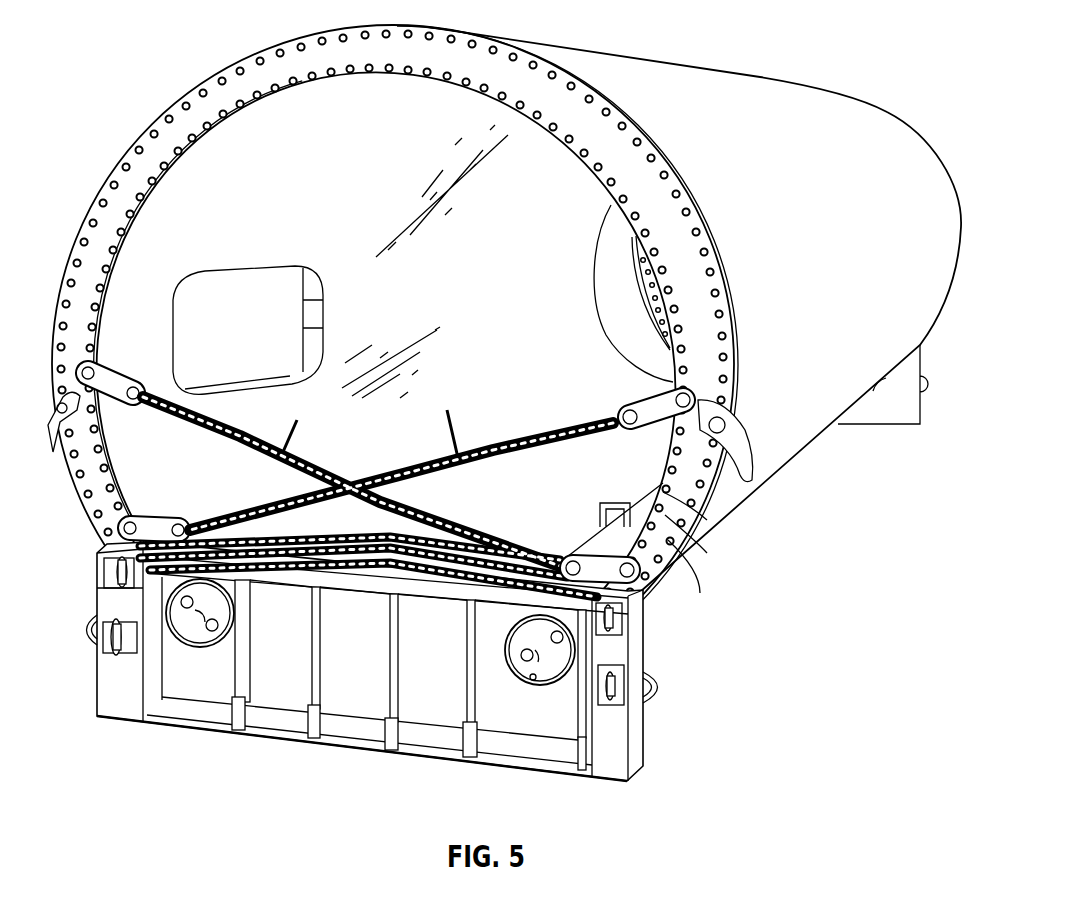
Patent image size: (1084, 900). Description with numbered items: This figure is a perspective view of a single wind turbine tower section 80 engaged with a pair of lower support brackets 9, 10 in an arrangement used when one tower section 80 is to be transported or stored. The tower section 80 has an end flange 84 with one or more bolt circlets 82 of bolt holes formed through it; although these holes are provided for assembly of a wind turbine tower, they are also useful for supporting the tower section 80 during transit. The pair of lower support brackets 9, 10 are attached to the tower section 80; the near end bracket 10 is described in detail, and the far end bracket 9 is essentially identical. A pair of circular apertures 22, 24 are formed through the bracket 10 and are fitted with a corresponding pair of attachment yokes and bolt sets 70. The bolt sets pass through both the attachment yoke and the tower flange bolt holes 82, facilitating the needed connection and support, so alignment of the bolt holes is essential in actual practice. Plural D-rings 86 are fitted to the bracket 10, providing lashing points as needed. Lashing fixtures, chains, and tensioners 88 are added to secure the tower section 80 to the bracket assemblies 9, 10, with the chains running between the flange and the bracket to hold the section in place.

The wind turbine tower section 80 is at (904, 113).
The far end lower support bracket 9 is at (922, 396).
The bolt circlets of bolt holes 82 is at (707, 533).
The end flange 84 is at (660, 580).
The D-rings 86 is at (613, 697).
The lashing fixtures, chains, and tensioners 88 is at (243, 527).
The near end lower support bracket 10 is at (647, 748).
The first circular aperture 22 is at (187, 648).
The second circular aperture 24 is at (537, 683).
The attachment yokes and bolt sets 70 is at (520, 650).